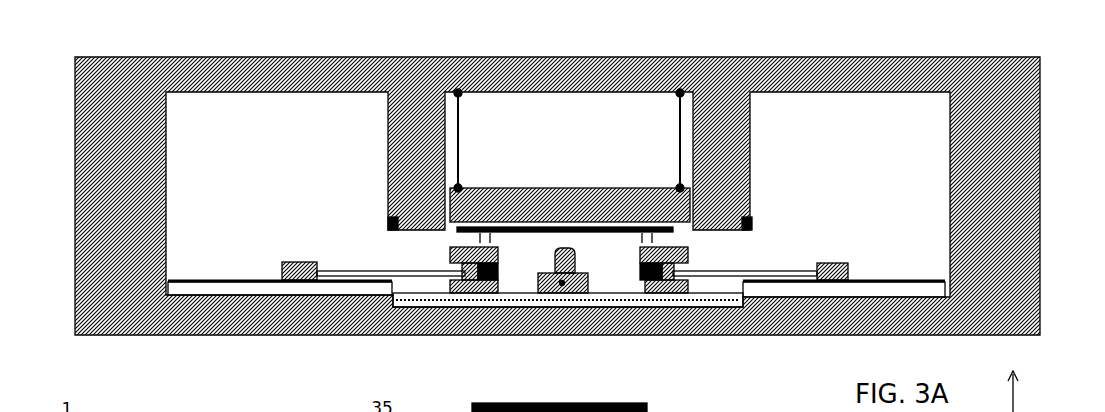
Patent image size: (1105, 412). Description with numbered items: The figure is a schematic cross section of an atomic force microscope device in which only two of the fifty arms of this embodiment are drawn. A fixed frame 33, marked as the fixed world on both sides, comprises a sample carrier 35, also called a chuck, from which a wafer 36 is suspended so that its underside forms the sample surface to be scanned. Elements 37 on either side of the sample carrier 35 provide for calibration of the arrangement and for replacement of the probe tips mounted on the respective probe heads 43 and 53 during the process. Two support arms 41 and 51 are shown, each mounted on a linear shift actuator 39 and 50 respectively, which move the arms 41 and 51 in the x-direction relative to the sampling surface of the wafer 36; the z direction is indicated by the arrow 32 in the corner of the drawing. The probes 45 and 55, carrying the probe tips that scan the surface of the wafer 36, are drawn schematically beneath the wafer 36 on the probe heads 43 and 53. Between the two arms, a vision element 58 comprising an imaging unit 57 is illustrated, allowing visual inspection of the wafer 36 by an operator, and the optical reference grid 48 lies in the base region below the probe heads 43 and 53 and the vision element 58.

The arrow 32 is at (1020, 397).
The fixed frame 33 is at (1042, 200).
The sample carrier 35 is at (580, 188).
The wafer 36 is at (673, 232).
The calibration elements 37 is at (388, 232).
The linear shift actuator 39 is at (217, 280).
The support arm 41 is at (337, 270).
The probe head 43 is at (450, 256).
The probe 45 is at (492, 237).
The optical reference grid 48 is at (723, 297).
The linear shift actuator 50 is at (893, 280).
The support arm 51 is at (800, 271).
The probe head 53 is at (683, 257).
The probe 55 is at (641, 240).
The imaging unit 57 is at (577, 257).
The vision element 58 is at (537, 277).